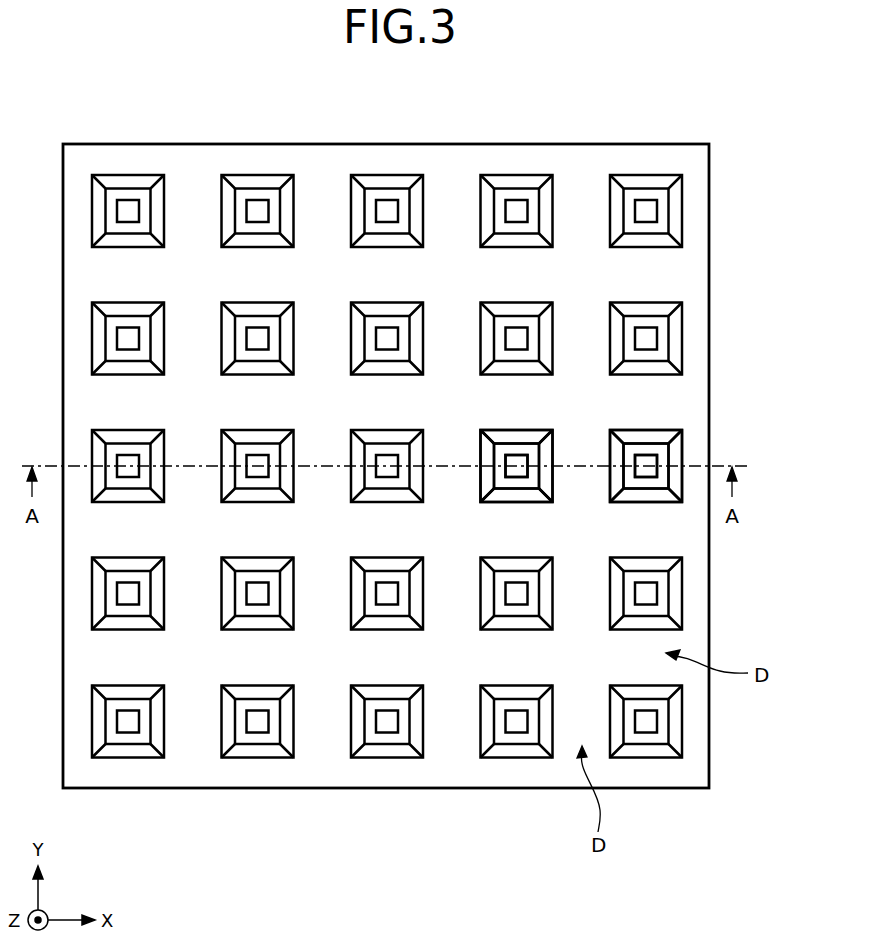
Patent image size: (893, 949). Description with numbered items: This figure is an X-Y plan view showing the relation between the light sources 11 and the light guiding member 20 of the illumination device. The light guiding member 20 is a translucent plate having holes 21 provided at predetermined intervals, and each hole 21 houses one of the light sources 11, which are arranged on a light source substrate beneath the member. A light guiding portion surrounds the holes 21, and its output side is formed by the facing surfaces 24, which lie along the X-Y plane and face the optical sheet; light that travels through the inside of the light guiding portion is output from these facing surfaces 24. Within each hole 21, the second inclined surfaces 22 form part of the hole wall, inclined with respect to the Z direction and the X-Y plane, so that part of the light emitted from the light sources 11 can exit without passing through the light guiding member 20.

The light guiding member 20 is at (693, 159).
The facing surfaces 24 is at (575, 193).
The light sources 11 is at (650, 462).
The second inclined surfaces 22 is at (616, 452).
The holes 21 is at (633, 480).